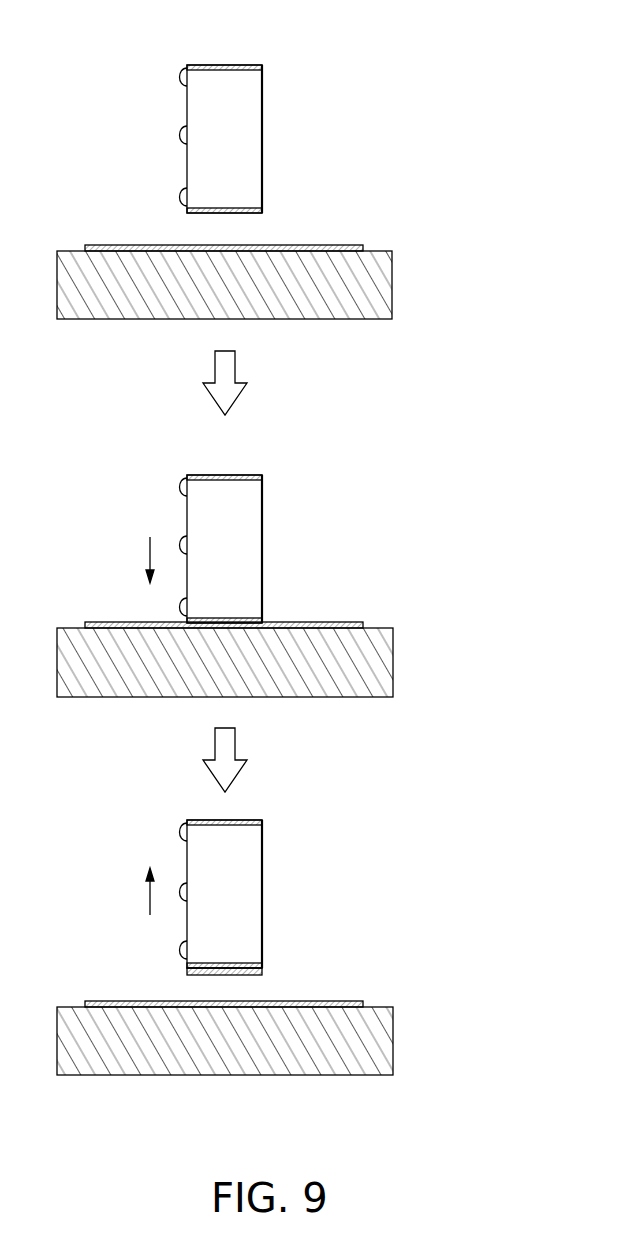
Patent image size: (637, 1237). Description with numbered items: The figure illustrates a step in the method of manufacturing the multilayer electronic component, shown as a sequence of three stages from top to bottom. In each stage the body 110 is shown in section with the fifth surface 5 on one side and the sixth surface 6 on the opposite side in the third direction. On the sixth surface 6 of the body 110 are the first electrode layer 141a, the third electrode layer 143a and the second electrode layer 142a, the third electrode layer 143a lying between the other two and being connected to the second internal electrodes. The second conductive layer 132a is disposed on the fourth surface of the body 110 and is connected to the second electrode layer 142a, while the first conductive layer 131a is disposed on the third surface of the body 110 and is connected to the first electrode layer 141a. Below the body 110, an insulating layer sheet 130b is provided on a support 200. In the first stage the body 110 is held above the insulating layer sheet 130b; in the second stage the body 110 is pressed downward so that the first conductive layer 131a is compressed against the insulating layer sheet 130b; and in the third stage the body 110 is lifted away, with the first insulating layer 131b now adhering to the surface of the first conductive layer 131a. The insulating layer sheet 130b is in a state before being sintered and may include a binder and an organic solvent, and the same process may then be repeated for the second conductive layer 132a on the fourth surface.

The body 110 is at (262, 134).
The second conductive layer 132a is at (262, 66).
The first conductive layer 131a is at (262, 211).
The first insulating layer 131b is at (262, 972).
The first electrode layer 141a is at (181, 197).
The second electrode layer 142a is at (181, 77).
The third electrode layer 143a is at (181, 135).
The insulating layer sheet 130b is at (363, 250).
The support 200 is at (392, 282).
The fifth surface 5 is at (280, 105).
The sixth surface 6 is at (169, 105).